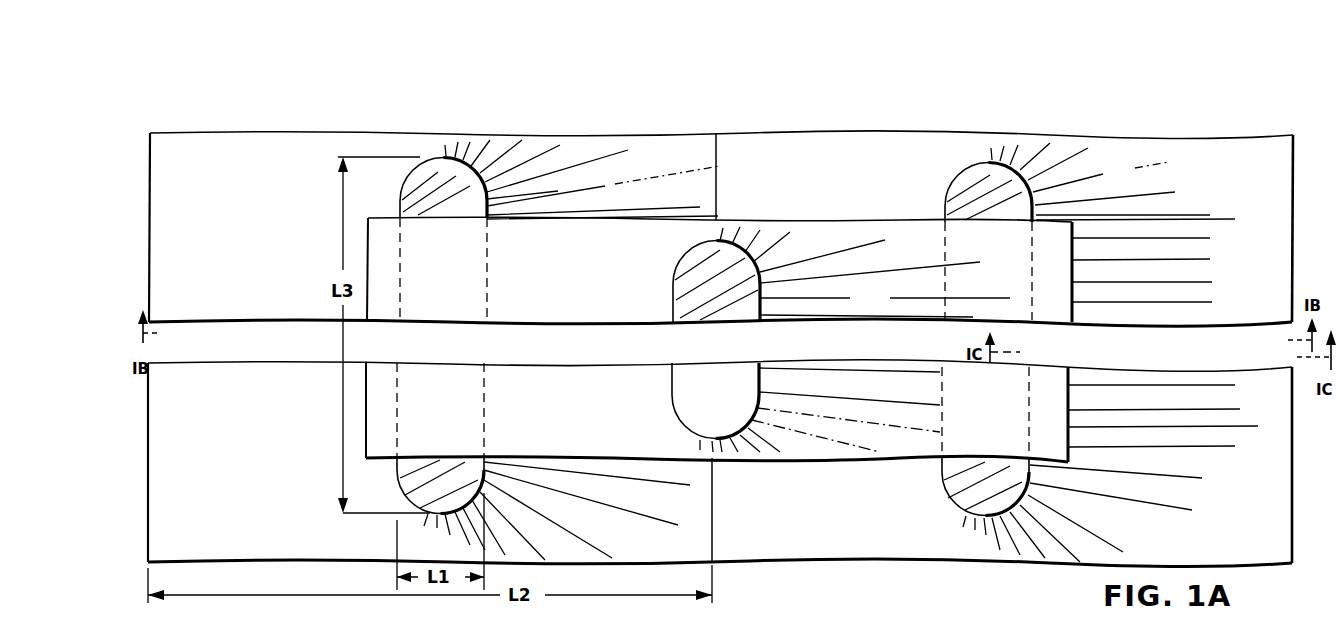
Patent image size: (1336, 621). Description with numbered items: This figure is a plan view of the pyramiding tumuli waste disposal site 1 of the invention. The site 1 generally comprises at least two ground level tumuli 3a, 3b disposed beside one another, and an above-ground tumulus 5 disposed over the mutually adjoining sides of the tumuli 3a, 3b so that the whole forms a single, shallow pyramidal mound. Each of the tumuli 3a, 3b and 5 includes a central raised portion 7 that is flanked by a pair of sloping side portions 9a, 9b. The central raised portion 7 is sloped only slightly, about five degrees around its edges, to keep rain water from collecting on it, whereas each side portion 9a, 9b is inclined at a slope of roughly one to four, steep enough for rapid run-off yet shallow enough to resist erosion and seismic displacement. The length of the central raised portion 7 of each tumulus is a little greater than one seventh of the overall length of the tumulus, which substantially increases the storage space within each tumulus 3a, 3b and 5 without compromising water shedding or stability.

The waste disposal site 1 is at (252, 118).
The ground level tumulus 3a is at (400, 131).
The ground level tumulus 3b is at (965, 132).
The above-ground tumulus 5 is at (700, 218).
The central raised portion 7 is at (461, 194).
The sloping side portion 9a is at (271, 200).
The sloping side portion 9b is at (603, 194).